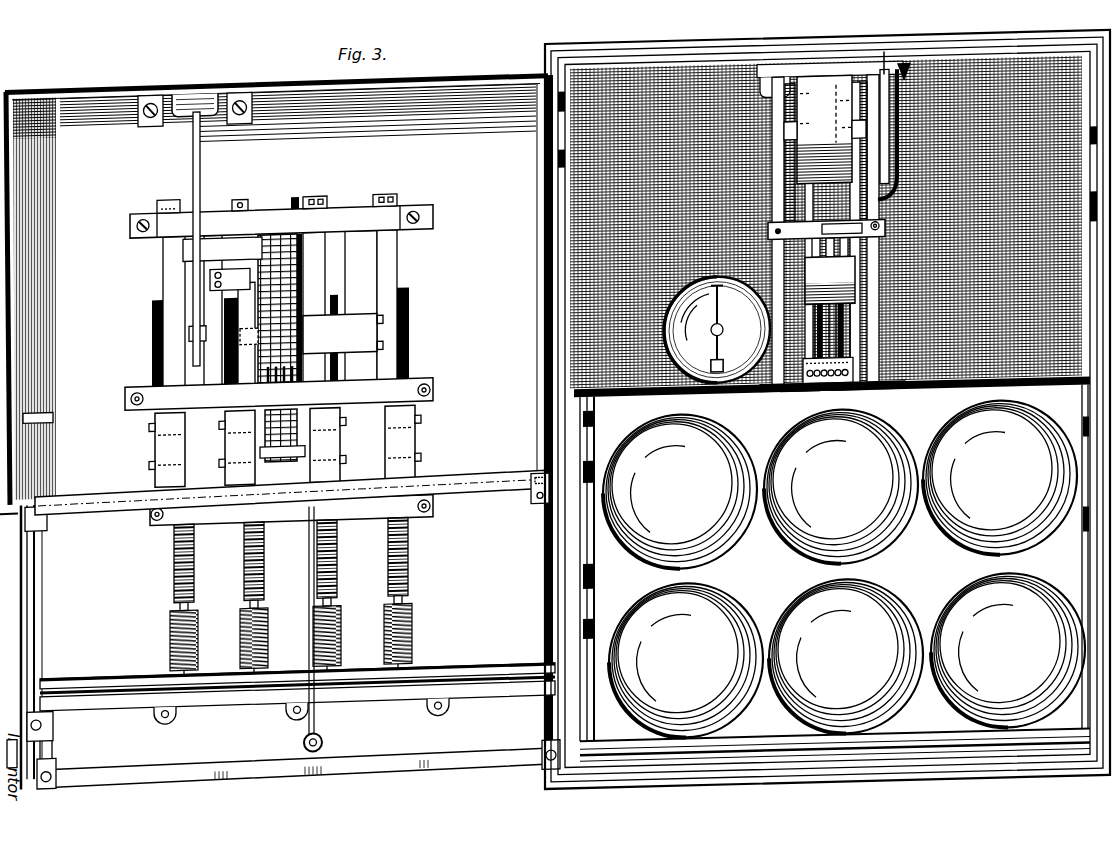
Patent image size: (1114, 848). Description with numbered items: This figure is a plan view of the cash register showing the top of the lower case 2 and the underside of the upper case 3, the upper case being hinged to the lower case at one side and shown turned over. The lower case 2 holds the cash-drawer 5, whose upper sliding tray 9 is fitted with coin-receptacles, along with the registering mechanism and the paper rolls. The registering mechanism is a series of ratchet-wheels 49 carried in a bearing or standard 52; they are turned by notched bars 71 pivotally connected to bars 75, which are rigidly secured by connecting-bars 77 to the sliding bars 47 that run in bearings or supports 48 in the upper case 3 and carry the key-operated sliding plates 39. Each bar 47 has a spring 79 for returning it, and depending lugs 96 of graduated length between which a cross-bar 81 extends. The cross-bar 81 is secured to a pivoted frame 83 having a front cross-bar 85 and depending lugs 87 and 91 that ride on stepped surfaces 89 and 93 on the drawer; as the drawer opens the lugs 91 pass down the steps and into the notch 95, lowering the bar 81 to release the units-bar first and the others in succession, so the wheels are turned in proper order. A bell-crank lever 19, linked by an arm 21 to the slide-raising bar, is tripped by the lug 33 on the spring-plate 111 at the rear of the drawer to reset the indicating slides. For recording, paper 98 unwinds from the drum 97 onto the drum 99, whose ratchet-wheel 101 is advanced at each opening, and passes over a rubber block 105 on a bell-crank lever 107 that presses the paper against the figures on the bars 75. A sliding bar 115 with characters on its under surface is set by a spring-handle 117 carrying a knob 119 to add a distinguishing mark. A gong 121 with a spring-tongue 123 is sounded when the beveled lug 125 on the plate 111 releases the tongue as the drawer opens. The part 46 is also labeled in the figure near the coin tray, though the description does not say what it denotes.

The lower case 2 is at (647, 73).
The upper case 3 is at (78, 107).
The cash-drawer 5 is at (1098, 444).
The upper sliding tray 9 is at (844, 569).
The bell-crank lever 19 is at (198, 188).
The arm 21 is at (203, 347).
The catch or lug 33 is at (905, 81).
The sliding plates 39 is at (163, 444).
The partition 46 is at (808, 420).
The movable bars 47 is at (170, 201).
The bearings or supports 48 is at (279, 226).
The ratchet-wheels 49 is at (852, 418).
The bearing or standard 52 is at (872, 380).
The movable bars 71 is at (250, 352).
The bars 75 is at (262, 270).
The connecting-bars 77 is at (278, 490).
The spring 79 is at (199, 650).
The cross-bar 81 is at (455, 495).
The pivoted frame 83 is at (42, 641).
The cross-bar 85 is at (211, 773).
The depending lugs or projections 87 is at (50, 776).
The surface 89 is at (588, 456).
The depending lugs 91 is at (540, 519).
The surface 93 is at (1092, 207).
The notch 95 is at (568, 166).
The depending lugs or projections 96 is at (174, 565).
The drum or wheel 97 is at (860, 83).
The strip of paper 98 is at (825, 190).
The drum 99 is at (868, 338).
The ratchet-wheel 101 is at (780, 250).
The block 105 is at (826, 231).
The bell-crank lever 107 is at (775, 144).
The spring-plate 111 is at (782, 258).
The sliding bar 115 is at (302, 325).
The spring-handle 117 is at (309, 594).
The knob 119 is at (323, 752).
The gong 121 is at (717, 329).
The spring-tongue 123 is at (723, 334).
The lug 125 is at (724, 368).